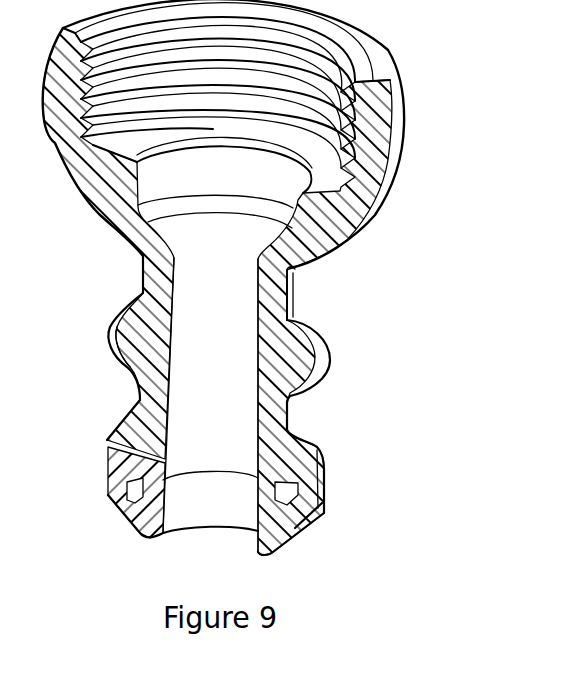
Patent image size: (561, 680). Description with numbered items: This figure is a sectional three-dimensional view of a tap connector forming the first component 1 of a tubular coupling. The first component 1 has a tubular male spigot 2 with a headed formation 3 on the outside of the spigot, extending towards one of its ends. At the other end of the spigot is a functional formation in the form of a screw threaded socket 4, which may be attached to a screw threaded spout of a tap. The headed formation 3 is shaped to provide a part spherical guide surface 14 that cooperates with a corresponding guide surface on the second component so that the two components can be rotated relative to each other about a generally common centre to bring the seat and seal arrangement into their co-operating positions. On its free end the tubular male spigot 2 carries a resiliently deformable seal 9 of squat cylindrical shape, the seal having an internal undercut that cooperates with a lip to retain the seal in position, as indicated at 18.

The first component 1 is at (415, 235).
The tubular male spigot 2 is at (282, 298).
The headed formation 3 is at (288, 368).
The screw threaded socket 4 is at (327, 95).
The resiliently deformable seal 9 is at (273, 543).
The guide surface 14 is at (310, 338).
The internal undercut and lip retention 18 is at (312, 508).